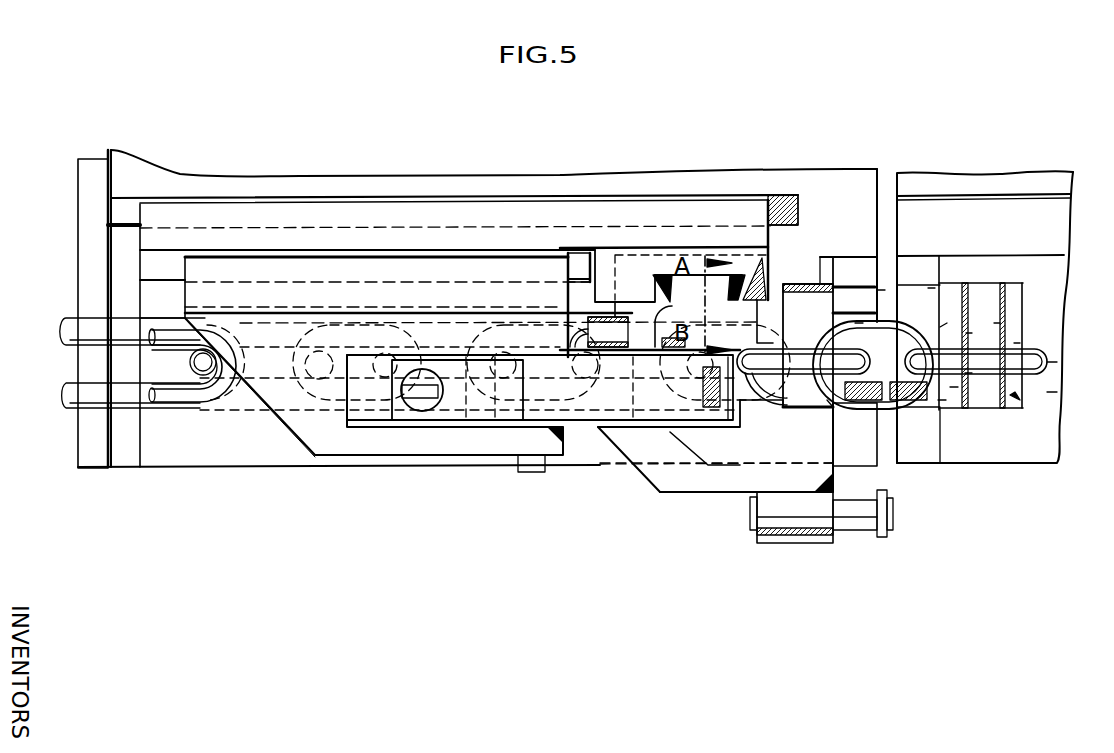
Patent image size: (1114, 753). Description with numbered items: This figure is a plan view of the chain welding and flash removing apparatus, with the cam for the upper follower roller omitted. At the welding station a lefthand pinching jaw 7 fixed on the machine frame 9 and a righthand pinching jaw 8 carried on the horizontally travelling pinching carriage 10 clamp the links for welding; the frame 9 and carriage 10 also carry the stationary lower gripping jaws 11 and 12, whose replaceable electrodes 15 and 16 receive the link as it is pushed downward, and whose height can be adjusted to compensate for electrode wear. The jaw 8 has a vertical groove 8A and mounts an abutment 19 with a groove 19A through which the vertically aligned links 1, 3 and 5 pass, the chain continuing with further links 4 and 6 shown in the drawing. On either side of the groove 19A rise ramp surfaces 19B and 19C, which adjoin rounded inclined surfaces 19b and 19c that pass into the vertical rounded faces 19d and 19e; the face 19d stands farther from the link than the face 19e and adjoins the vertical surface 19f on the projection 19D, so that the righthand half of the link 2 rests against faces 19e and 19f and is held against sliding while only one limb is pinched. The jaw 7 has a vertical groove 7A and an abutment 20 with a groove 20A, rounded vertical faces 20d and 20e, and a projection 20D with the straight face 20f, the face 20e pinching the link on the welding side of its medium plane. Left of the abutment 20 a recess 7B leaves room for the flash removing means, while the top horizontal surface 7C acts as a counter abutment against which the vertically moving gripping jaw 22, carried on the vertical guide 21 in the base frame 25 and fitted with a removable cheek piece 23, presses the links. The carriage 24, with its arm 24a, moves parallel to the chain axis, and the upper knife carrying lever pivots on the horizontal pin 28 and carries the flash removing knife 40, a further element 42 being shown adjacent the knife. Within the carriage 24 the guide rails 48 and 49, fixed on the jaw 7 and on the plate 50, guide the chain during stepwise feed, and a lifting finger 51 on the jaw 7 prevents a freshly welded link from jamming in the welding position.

The chain link 1 is at (1030, 357).
The chain link 2 is at (885, 327).
The chain link 3 is at (795, 358).
The chain link 4 is at (747, 388).
The chain link 5 is at (660, 328).
The projection 6 is at (582, 330).
The lefthand pinching jaw 7 is at (753, 452).
The vertical groove 7A is at (740, 400).
The recess 7B is at (715, 458).
The top horizontal surface 7C is at (635, 312).
The righthand pinching jaw 8 is at (1047, 392).
The vertically extending groove 8A is at (1053, 367).
The machine frame 9 is at (173, 177).
The pinching carriage 10 is at (1057, 223).
The lower gripping jaw 11 is at (847, 455).
The lower gripping jaw 12 is at (908, 463).
The electrode 15 is at (850, 402).
The electrode 16 is at (910, 400).
The abutment 19 is at (1030, 342).
The vertically extending groove 19A is at (968, 373).
The ramp surface 19B is at (1017, 343).
The ramp surface 19C is at (1017, 397).
The projection 19D is at (930, 288).
The rounded inclined surface 19b is at (997, 323).
The rounded inclined surface 19c is at (953, 387).
The vertical rounded face 19d is at (970, 333).
The vertical rounded face 19e is at (942, 400).
The vertical surface 19f is at (940, 327).
The abutment 20 is at (808, 287).
The vertical groove 20A is at (777, 393).
The projection 20D is at (857, 323).
The rounded vertical face 20d is at (827, 323).
The rounded vertical face 20e is at (822, 393).
The straight face 20f is at (880, 290).
The vertical guide 21 is at (660, 260).
The gripping jaw 22 is at (738, 308).
The removable cheek piece 23 is at (803, 331).
The carriage 24 is at (293, 258).
The arm 24a is at (403, 443).
The base frame 25 is at (148, 268).
The horizontal pin 28 is at (543, 460).
The flash removing knife 40 is at (707, 387).
The screw 42 is at (420, 387).
The guide rail 48 is at (67, 327).
The guide rail 49 is at (67, 397).
The plate 50 is at (80, 237).
The lifting finger 51 is at (883, 535).